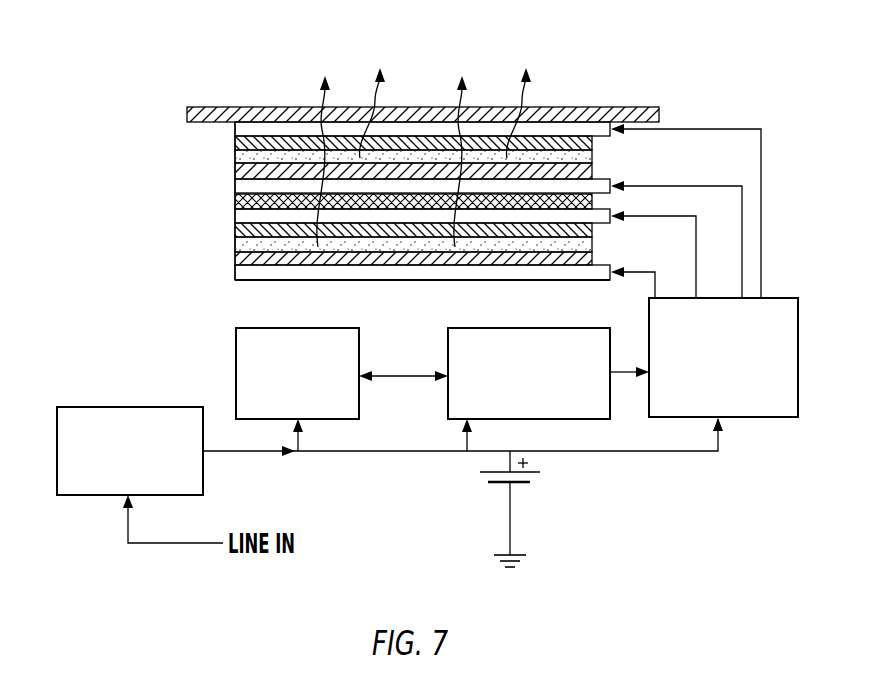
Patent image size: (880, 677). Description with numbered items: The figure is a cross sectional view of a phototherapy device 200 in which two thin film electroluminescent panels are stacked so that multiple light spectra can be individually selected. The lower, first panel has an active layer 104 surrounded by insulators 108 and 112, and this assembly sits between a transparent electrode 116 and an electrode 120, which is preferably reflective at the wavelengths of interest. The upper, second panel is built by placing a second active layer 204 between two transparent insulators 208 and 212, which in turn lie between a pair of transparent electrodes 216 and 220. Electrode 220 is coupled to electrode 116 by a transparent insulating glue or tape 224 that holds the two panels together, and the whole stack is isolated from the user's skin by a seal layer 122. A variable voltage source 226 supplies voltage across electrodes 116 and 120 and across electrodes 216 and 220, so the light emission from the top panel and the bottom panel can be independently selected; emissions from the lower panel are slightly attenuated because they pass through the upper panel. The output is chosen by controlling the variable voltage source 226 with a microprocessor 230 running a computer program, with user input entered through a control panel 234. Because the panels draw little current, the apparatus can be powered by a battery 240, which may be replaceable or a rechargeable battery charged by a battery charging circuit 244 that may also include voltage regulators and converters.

The phototherapy device 200 is at (744, 49).
The transparent electrode 216 is at (250, 120).
The seal layer 122 is at (598, 106).
The transparent insulator 208 is at (237, 144).
The second active layer 204 is at (237, 157).
The transparent electrode 220 is at (237, 188).
The transparent insulator 212 is at (592, 170).
The transparent insulating glue or tape 224 is at (592, 201).
The transparent electrode 116 is at (237, 217).
The insulator 108 is at (237, 230).
The active layer 104 is at (237, 247).
The insulator 112 is at (592, 257).
The electrode 120 is at (237, 278).
The control panel 234 is at (300, 328).
The microprocessor 230 is at (518, 328).
The variable voltage source 226 is at (752, 417).
The battery charging circuit 244 is at (72, 407).
The battery 240 is at (490, 483).